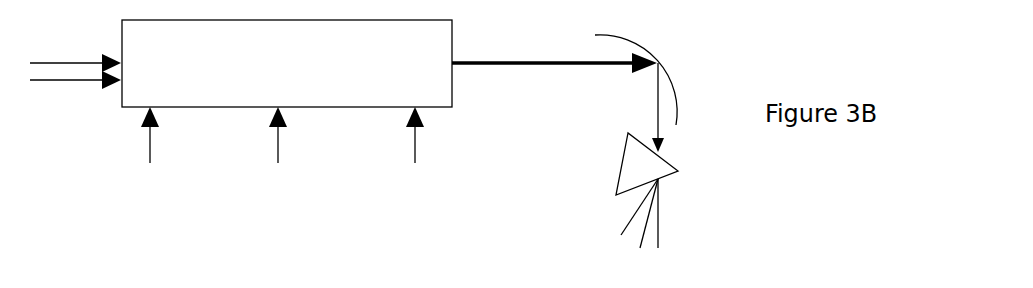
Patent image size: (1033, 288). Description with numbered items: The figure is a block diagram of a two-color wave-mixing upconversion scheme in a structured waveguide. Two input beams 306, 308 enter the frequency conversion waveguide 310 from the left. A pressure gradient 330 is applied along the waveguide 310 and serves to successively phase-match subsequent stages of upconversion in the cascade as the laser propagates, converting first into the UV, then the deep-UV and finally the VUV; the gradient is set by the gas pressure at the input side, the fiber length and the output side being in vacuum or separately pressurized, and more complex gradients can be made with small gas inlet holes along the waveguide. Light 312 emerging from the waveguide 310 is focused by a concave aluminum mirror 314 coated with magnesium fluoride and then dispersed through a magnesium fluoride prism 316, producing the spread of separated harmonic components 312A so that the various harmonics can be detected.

The first input light signal 306 is at (75, 54).
The second input light signal 308 is at (75, 92).
The frequency conversion waveguide 310 is at (287, 63).
The light emerging from the waveguide 312 is at (554, 50).
The concave aluminum mirror 314 is at (659, 76).
The MgF2 prism 316 is at (679, 129).
The pressure gradient 330 is at (282, 154).
The detected light beam components 312A is at (661, 230).